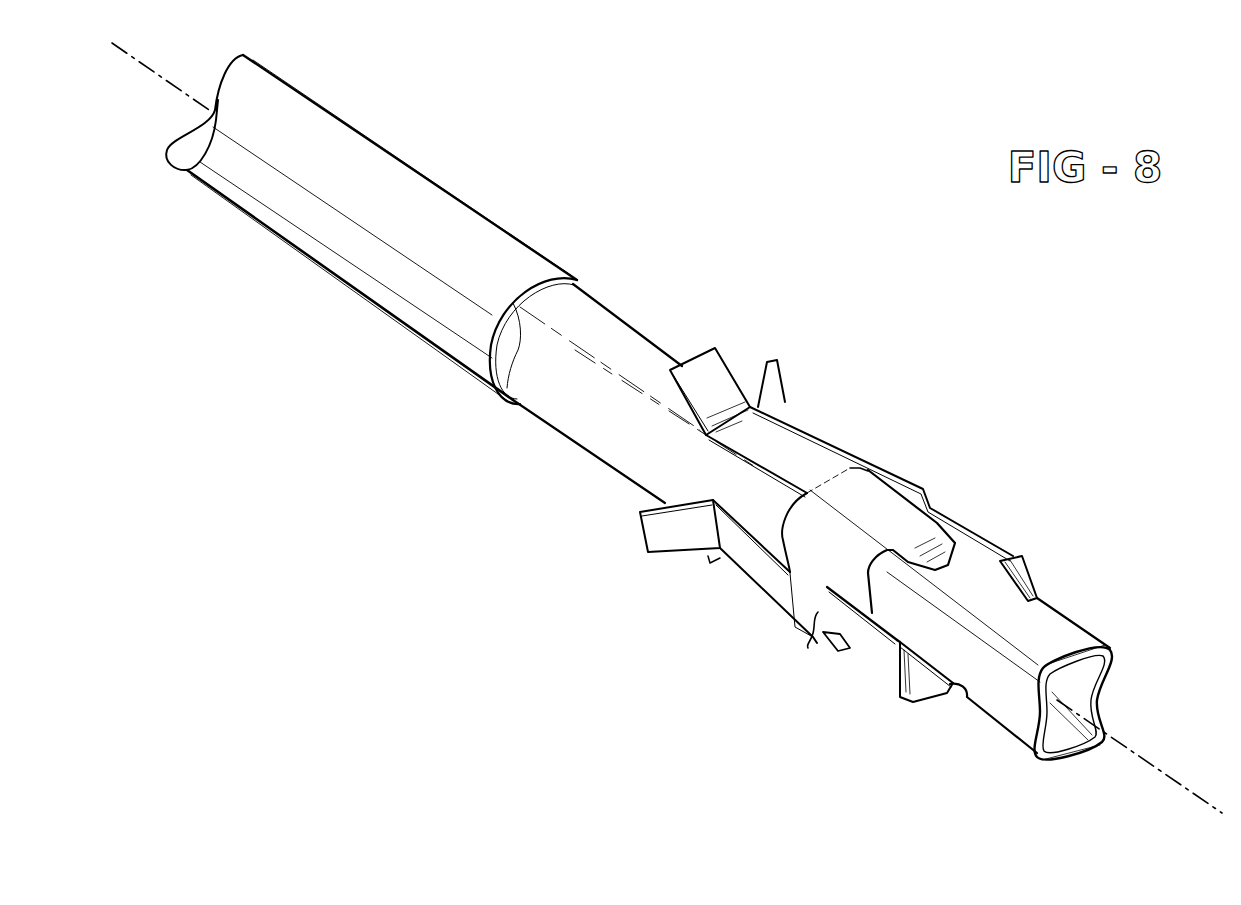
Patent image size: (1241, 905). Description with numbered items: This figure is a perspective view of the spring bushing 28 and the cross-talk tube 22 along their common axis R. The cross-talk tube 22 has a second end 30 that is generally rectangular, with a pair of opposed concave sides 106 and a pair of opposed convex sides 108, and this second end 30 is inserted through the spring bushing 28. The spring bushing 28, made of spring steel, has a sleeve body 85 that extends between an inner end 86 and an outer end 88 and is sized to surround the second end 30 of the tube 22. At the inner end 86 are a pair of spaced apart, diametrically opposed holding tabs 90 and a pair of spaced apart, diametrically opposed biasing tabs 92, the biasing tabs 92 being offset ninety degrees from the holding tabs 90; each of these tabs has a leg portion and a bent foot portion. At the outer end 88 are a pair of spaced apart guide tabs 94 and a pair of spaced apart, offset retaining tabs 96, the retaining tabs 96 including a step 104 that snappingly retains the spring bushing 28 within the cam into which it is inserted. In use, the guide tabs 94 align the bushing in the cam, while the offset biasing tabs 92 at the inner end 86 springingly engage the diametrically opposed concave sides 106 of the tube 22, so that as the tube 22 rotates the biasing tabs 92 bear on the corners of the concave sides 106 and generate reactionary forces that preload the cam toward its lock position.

The cross-talk tube 22 is at (257, 223).
The second end 30 is at (622, 340).
The spring bushing 28 is at (873, 487).
The sleeve body 85 is at (812, 645).
The inner end 86 is at (640, 530).
The outer end 88 is at (973, 693).
The holding tabs 90 is at (787, 442).
The biasing tabs 92 is at (825, 423).
The guide tabs 94 is at (943, 537).
The retaining tabs 96 is at (980, 538).
The step 104 is at (1040, 568).
The concave sides 106 is at (1107, 695).
The convex sides 108 is at (1067, 632).
The longitudinal axis R is at (1183, 787).